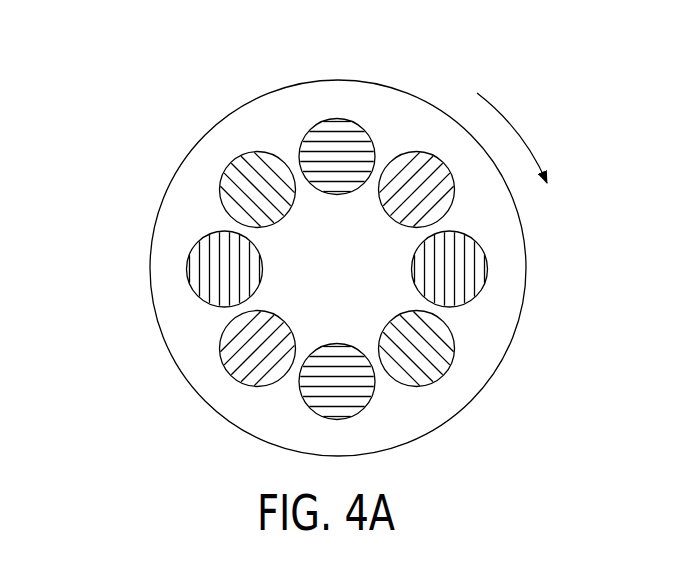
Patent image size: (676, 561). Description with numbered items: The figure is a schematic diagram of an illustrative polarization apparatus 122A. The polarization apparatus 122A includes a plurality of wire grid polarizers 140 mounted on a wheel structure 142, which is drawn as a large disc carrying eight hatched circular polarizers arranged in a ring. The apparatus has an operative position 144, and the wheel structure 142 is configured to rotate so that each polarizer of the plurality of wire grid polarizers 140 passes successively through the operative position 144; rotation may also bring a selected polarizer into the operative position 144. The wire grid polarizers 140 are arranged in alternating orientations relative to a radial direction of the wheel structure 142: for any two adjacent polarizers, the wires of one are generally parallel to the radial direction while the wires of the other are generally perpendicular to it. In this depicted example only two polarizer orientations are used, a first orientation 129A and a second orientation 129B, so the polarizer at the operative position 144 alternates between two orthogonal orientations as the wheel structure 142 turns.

The polarization apparatus 122A is at (315, 237).
The first orientation 129A is at (210, 175).
The second orientation 129B is at (182, 267).
The plurality of wire grid polarizers 140 is at (207, 303).
The wheel structure 142 is at (493, 335).
The operative position 144 is at (375, 122).